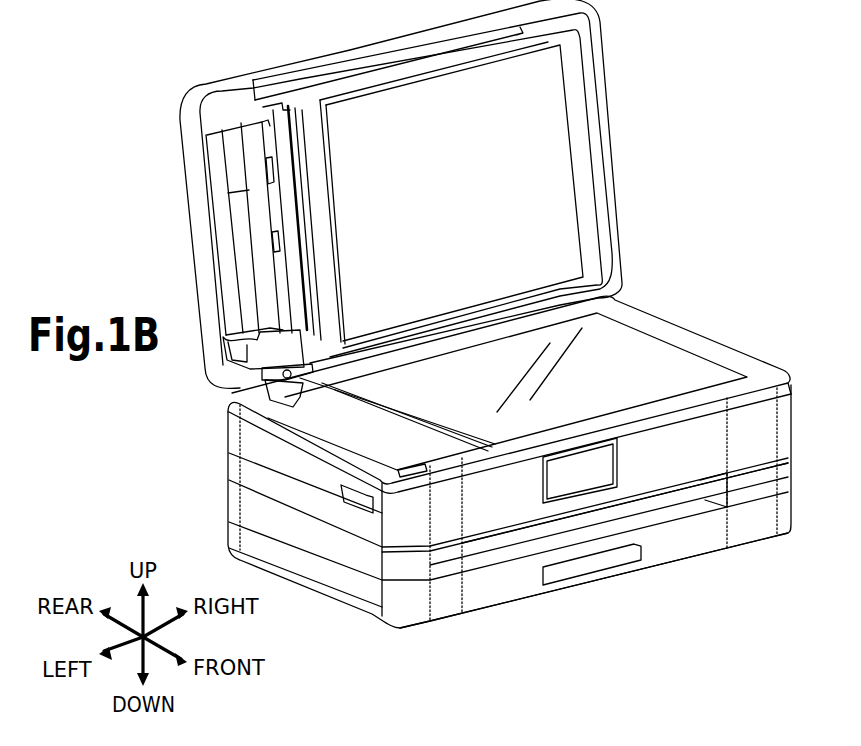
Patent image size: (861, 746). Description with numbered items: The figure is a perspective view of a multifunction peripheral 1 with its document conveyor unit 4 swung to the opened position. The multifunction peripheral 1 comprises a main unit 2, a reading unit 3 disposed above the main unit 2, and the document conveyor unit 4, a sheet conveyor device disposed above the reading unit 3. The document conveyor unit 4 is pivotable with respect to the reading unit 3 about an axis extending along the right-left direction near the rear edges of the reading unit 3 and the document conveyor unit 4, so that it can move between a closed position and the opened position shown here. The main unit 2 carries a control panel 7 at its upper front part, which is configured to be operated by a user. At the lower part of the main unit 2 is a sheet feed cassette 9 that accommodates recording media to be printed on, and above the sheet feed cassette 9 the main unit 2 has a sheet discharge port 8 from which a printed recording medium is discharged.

The multifunction peripheral 1 is at (204, 73).
The main unit 2 is at (230, 528).
The reading unit 3 is at (230, 422).
The document conveyor unit 4 is at (177, 146).
The control panel 7 is at (656, 452).
The sheet discharge port 8 is at (586, 519).
The sheet feed cassette 9 is at (503, 580).